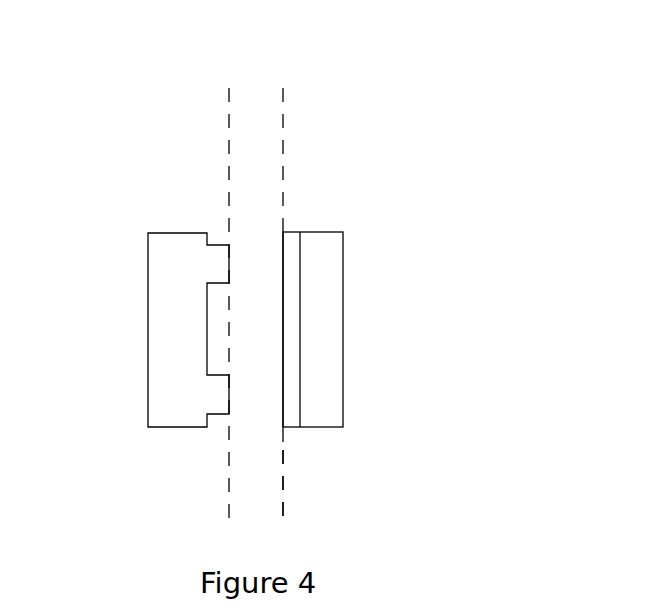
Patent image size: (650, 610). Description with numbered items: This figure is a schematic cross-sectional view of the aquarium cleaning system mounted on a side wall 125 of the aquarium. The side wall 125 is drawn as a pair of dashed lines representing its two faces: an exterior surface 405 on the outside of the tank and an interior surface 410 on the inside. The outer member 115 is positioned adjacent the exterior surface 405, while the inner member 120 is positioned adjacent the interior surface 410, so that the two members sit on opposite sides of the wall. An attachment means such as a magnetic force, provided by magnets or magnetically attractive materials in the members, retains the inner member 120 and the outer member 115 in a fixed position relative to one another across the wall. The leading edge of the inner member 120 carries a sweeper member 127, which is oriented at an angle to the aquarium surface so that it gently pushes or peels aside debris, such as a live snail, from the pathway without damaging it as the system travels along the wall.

The outer member 115 is at (148, 260).
The inner member 120 is at (342, 268).
The side wall 125 is at (268, 115).
The sweeper member 127 is at (300, 265).
The exterior surface 405 is at (229, 178).
The interior surface 410 is at (284, 460).